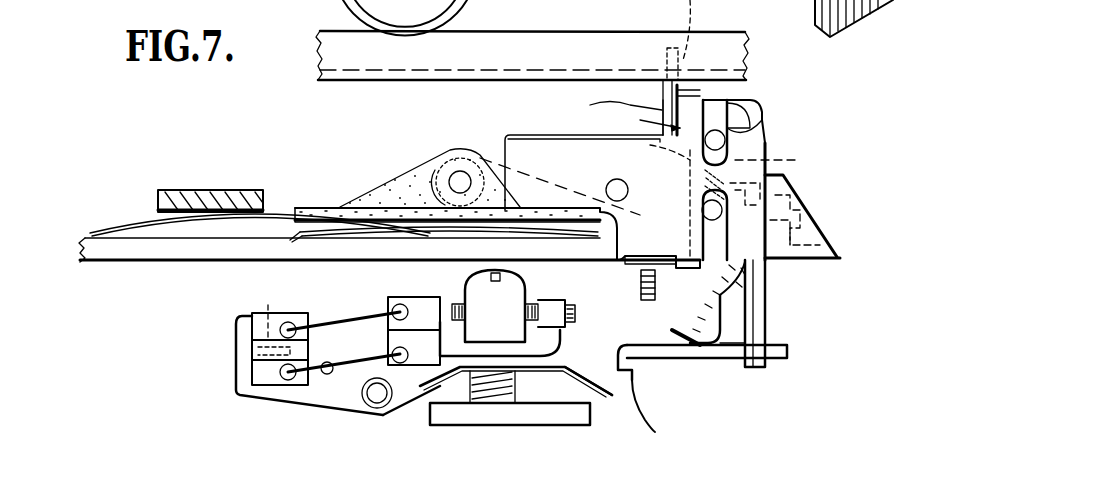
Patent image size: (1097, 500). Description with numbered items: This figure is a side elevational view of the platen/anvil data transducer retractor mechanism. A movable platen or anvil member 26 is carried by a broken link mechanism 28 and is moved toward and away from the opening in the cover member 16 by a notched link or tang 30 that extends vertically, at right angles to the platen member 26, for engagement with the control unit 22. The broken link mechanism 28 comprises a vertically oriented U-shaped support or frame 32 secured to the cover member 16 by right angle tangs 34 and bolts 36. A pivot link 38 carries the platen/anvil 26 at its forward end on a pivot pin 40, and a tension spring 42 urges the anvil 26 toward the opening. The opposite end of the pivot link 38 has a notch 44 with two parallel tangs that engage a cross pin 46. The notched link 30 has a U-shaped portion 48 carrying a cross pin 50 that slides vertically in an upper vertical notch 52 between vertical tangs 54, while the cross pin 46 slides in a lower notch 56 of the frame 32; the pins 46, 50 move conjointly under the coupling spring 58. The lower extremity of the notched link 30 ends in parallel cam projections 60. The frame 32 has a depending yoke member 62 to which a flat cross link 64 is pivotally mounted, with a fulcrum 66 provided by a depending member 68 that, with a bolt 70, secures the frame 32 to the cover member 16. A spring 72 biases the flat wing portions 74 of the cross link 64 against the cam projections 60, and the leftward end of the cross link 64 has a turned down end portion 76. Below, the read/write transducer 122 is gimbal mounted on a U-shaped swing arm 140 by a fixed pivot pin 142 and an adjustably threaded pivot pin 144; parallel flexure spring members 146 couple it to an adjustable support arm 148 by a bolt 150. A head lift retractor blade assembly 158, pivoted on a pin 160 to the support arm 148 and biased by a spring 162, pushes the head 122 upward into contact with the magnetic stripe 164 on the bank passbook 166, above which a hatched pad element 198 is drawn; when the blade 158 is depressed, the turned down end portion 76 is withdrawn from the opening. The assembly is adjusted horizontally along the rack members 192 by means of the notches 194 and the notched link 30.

The cover member 16 is at (840, 258).
The control unit 22 is at (548, 34).
The platen or anvil member 26 is at (322, 208).
The broken link mechanism 28 is at (768, 124).
The notched link or tang 30 is at (697, 90).
The U-shaped support or frame 32 is at (765, 115).
The right angle tangs 34 is at (630, 270).
The bolts 36 is at (940, 0).
The pivot link 38 is at (490, 148).
The pivot pin 40 is at (460, 182).
The tension spring 42 is at (505, 136).
The notch 44 is at (800, 190).
The cross pin 46 is at (700, 212).
The U-shaped portion 48 is at (612, 103).
The cross pin 50 is at (734, 116).
The upper vertical notch 52 is at (677, 100).
The vertical tangs 54 is at (643, 119).
The lower notch 56 is at (704, 240).
The coupling spring 58 is at (791, 159).
The cam projections 60 is at (692, 350).
The depending yoke member 62 is at (770, 330).
The cross link 64 is at (660, 352).
The fulcrum 66 is at (778, 364).
The depending member 68 is at (765, 292).
The bolt 70 is at (801, 223).
The spring 72 is at (788, 308).
The wing portions 74 is at (723, 358).
The turned down end portion 76 is at (652, 432).
The transducer 122 is at (512, 320).
The swing arm 140 is at (430, 390).
The fixed pivot pin 142 is at (460, 300).
The adjustably threaded pivot pin 144 is at (578, 304).
The flexure spring members 146 is at (343, 326).
The adjustable support arm 148 is at (332, 397).
The bolt 150 is at (274, 304).
The head lift retractor blade assembly 158 is at (596, 396).
The pin 160 is at (372, 400).
The spring 162 is at (492, 390).
The magnetic stripe 164 is at (420, 253).
The bank passbook 166 is at (155, 212).
The rack members 192 is at (320, 43).
The notches 194 is at (668, 48).
The pad 198 is at (198, 190).